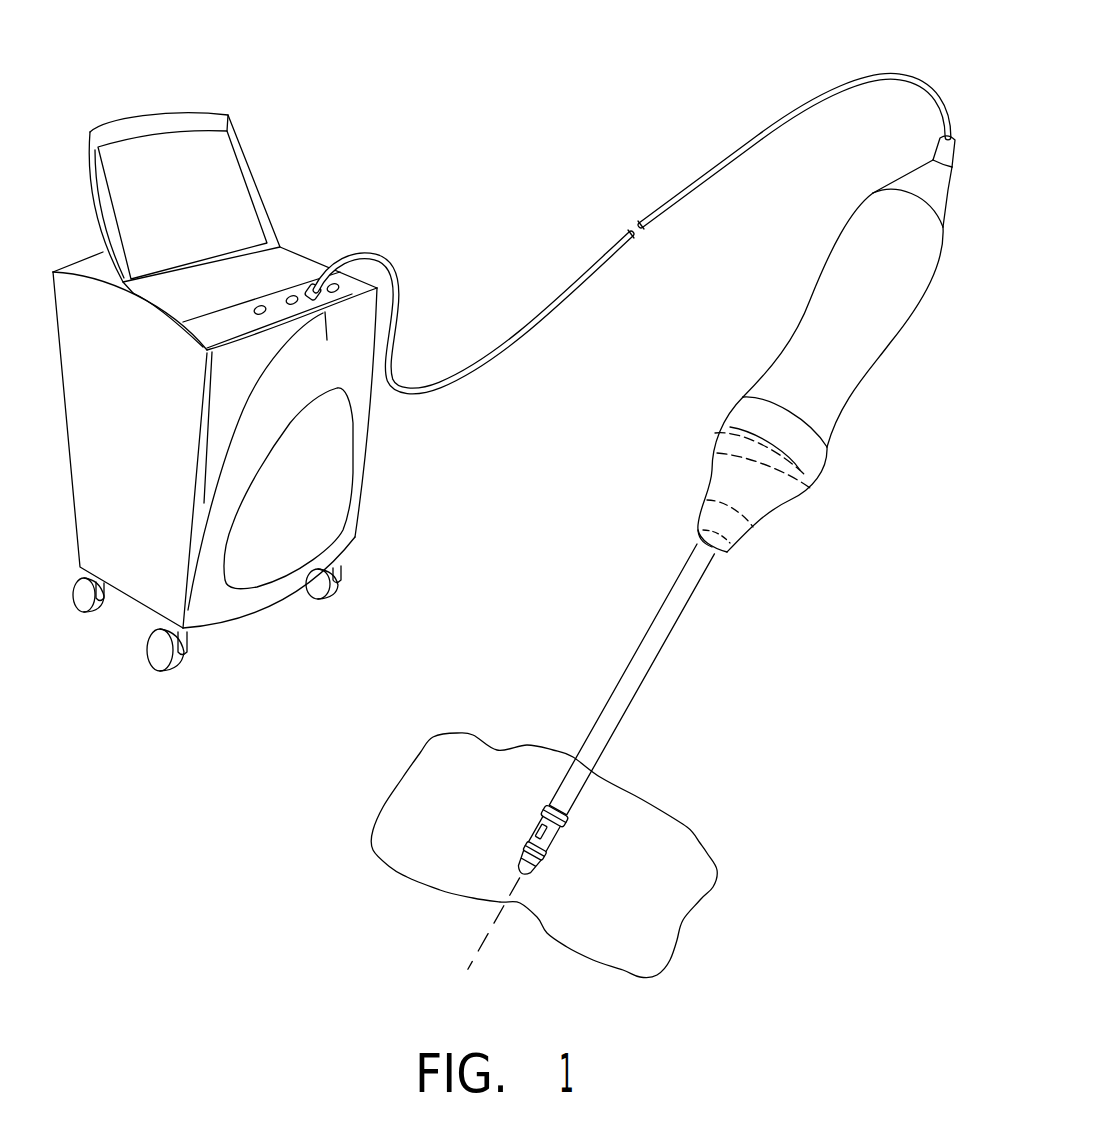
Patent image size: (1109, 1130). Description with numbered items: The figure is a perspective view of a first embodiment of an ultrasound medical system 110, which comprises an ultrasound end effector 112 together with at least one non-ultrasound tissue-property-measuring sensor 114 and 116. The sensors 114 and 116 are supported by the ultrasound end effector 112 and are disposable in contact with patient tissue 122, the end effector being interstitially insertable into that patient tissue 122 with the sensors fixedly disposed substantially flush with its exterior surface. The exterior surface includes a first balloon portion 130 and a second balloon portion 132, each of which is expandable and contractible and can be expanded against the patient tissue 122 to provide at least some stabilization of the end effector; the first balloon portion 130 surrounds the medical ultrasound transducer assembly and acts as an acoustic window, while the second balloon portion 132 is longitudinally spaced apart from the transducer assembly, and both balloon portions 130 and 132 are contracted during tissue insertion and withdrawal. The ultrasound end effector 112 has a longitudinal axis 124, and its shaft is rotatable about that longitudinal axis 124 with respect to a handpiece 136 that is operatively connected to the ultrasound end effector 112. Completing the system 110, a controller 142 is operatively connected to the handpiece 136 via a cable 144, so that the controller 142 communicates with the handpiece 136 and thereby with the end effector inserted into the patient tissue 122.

The ultrasound medical system 110 is at (443, 100).
The ultrasound end effector 112 is at (583, 867).
The non-ultrasound tissue-property-measuring sensor 114 is at (527, 827).
The non-ultrasound tissue-property-measuring sensor 116 is at (520, 860).
The patient tissue 122 is at (657, 803).
The longitudinal axis 124 is at (485, 940).
The first balloon portion 130 is at (545, 865).
The second balloon portion 132 is at (563, 830).
The handpiece 136 is at (793, 333).
The controller 142 is at (290, 220).
The cable 144 is at (557, 313).